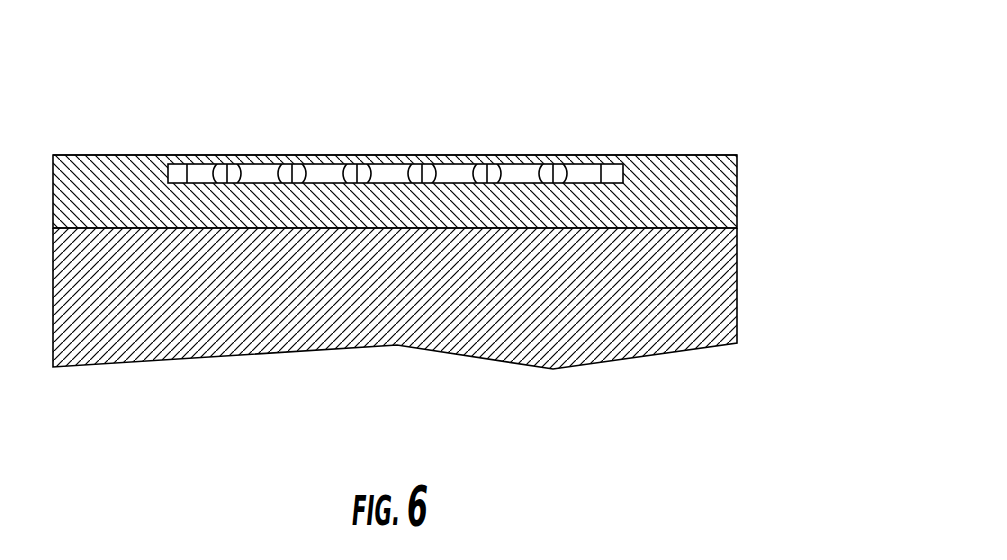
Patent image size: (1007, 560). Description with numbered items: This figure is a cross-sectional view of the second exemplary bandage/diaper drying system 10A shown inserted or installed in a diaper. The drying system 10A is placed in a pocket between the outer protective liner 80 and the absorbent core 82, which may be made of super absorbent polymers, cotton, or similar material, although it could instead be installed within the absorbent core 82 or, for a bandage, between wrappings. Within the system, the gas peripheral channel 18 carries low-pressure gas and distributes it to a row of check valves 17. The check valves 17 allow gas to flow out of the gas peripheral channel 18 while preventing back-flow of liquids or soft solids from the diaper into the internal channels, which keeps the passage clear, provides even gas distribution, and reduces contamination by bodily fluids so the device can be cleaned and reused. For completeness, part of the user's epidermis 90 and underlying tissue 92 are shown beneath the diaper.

The bandage/diaper drying system 10A is at (665, 108).
The check valves 17 is at (247, 176).
The gas peripheral channel 18 is at (187, 176).
The outer protective liner 80 is at (740, 155).
The absorbent core 82 is at (723, 195).
The epidermis 90 is at (737, 227).
The tissue 92 is at (722, 298).